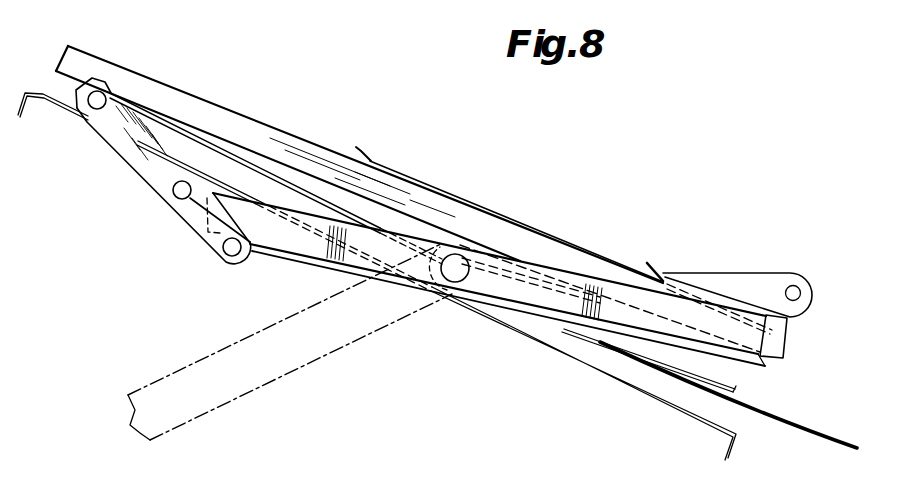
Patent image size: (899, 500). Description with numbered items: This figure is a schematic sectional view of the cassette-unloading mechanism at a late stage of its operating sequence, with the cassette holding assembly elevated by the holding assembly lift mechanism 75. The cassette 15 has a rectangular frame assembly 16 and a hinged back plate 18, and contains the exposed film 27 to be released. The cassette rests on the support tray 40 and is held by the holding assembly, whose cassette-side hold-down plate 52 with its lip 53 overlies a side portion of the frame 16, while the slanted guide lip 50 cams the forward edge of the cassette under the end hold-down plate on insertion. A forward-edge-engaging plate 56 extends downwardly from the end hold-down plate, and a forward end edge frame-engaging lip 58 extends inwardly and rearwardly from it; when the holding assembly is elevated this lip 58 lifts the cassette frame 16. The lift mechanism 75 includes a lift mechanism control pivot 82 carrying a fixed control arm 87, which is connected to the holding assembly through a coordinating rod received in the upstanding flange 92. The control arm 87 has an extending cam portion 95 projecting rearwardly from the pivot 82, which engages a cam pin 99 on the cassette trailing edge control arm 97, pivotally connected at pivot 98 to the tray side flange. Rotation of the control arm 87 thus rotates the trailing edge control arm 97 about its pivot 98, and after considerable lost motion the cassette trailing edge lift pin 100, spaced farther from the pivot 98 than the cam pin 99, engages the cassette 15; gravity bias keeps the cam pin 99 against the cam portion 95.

The cassette 15 is at (183, 74).
The rectangular frame assembly 16 is at (234, 118).
The back plate 18 is at (708, 385).
The exposed film 27 is at (807, 412).
The support tray 40 is at (653, 399).
The slanted guide lip 50 is at (655, 266).
The cassette-side hold-down plate 52 is at (460, 194).
The lip 53 is at (366, 152).
The forward-edge-engaging plate 56 is at (790, 347).
The forward end edge frame-engaging lip 58 is at (762, 362).
The holding assembly lift mechanism 75 is at (148, 350).
The lift mechanism control pivot 82 is at (466, 258).
The control arm 87 is at (620, 317).
The upstanding flange 92 is at (737, 226).
The extending cam portion 95 is at (279, 247).
The cassette trailing edge control arm 97 is at (140, 170).
The pivot 98 is at (180, 199).
The cam pin 99 is at (237, 257).
The cassette trailing edge lift pin 100 is at (89, 111).